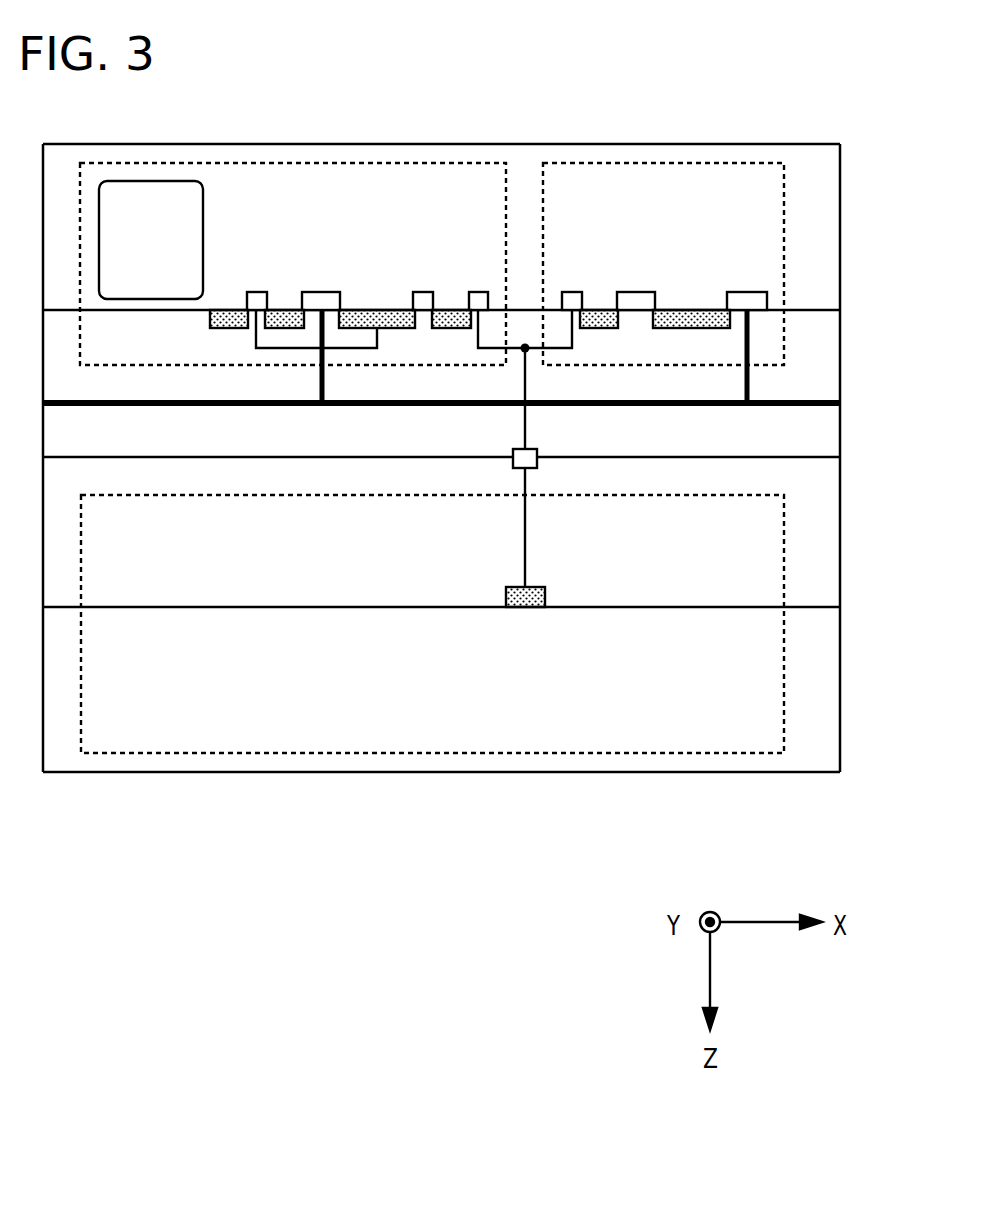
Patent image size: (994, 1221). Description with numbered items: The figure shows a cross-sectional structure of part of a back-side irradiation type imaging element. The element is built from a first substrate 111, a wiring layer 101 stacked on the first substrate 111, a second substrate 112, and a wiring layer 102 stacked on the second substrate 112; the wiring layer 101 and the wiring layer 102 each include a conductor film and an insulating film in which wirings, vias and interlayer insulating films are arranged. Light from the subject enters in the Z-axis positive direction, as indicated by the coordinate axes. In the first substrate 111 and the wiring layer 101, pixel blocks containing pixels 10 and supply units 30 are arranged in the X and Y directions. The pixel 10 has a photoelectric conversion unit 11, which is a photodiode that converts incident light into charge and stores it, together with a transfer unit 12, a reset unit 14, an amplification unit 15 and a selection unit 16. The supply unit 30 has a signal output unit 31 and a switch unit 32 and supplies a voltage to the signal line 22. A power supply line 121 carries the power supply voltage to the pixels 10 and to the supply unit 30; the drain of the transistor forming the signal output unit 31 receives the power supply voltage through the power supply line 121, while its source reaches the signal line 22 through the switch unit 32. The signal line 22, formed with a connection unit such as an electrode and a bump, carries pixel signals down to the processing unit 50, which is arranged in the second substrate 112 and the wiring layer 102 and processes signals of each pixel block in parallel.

The pixel 10 is at (302, 164).
The photoelectric conversion unit 11 is at (151, 240).
The transfer unit 12 is at (249, 282).
The reset unit 14 is at (318, 282).
The amplification unit 15 is at (420, 282).
The selection unit 16 is at (482, 282).
The signal line 22 is at (528, 433).
The supply unit 30 is at (727, 164).
The signal output unit 31 is at (760, 282).
The switch unit 32 is at (633, 282).
The processing unit 50 is at (727, 755).
The wiring layer 101 is at (870, 310).
The wiring layer 102 is at (870, 457).
The first substrate 111 is at (870, 144).
The second substrate 112 is at (870, 607).
The power supply line 121 is at (263, 405).